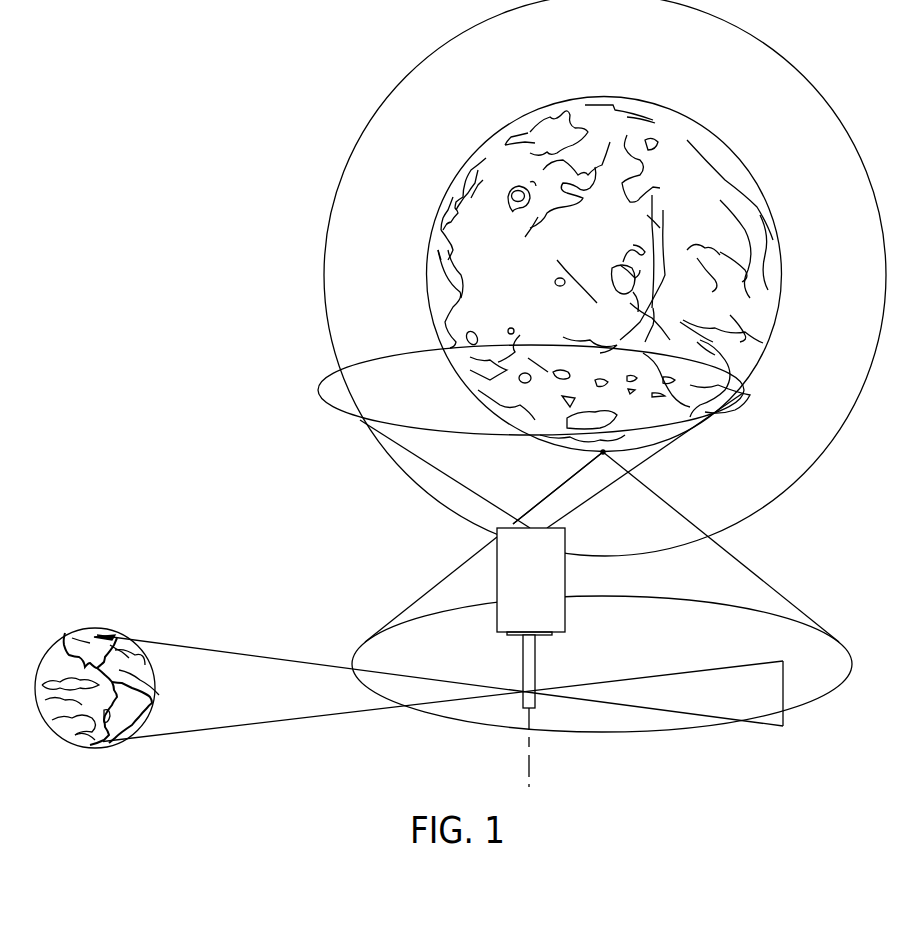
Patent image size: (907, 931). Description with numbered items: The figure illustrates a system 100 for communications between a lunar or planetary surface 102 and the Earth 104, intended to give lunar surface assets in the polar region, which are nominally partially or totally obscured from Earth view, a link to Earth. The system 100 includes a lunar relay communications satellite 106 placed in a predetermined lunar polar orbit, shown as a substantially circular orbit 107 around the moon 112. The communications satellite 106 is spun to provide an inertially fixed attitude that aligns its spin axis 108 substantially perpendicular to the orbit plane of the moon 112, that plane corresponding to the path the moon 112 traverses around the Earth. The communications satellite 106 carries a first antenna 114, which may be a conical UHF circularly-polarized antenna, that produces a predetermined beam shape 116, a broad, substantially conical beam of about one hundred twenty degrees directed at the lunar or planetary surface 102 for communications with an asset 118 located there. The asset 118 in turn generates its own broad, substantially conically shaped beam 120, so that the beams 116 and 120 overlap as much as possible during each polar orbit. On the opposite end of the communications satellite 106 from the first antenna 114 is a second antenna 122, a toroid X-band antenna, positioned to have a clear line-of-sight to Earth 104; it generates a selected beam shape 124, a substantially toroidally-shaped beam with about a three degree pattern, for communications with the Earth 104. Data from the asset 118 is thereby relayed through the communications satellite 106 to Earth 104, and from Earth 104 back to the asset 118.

The system 100 is at (332, 559).
The lunar or planetary surface 102 is at (735, 419).
The Earth 104 is at (65, 633).
The lunar relay communications satellite 106 is at (565, 612).
The substantially circular orbit 107 is at (817, 86).
The spin axis 108 is at (530, 762).
The moon 112 is at (735, 150).
The first antenna 114 is at (542, 527).
The predetermined beam shape 116 is at (390, 355).
The asset 118 is at (603, 456).
The substantially conically shaped beam 120 is at (823, 697).
The second antenna 122 is at (523, 665).
The selected beam shape 124 is at (250, 727).